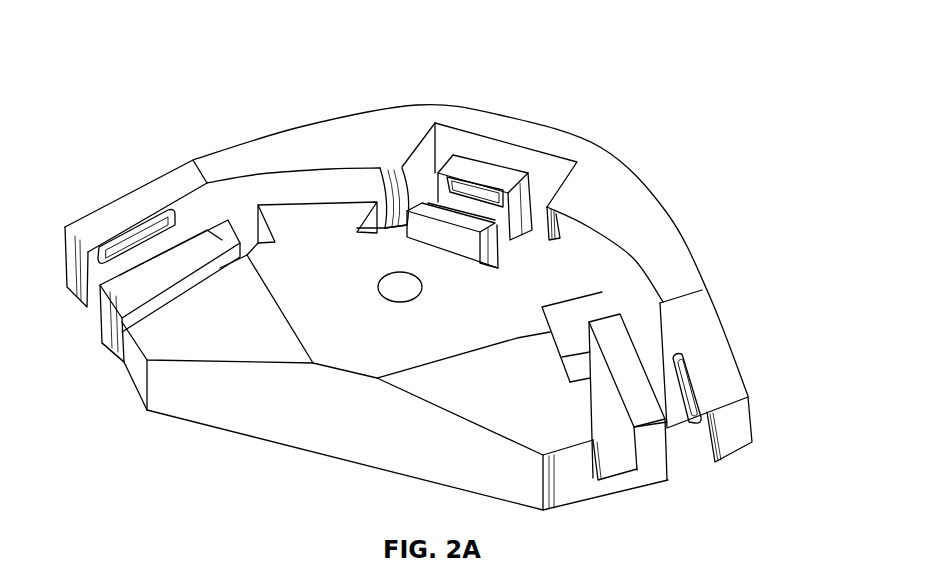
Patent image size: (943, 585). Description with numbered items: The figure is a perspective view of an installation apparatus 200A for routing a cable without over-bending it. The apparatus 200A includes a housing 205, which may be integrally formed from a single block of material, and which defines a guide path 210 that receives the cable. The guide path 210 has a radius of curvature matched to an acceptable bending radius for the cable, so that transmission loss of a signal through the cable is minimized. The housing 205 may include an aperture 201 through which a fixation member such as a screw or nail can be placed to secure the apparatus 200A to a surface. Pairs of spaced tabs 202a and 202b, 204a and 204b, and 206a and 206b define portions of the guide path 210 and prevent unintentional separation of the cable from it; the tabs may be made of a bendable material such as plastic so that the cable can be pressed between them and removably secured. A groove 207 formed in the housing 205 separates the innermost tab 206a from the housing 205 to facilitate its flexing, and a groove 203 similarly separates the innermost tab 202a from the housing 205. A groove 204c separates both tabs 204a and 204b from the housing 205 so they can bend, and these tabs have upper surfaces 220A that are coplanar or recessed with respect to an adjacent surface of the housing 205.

The installation apparatus 200A is at (148, 68).
The upper surfaces 220A is at (428, 208).
The aperture 201 is at (378, 288).
The innermost tab 202a is at (638, 378).
The tab 202b is at (690, 382).
The groove 203 is at (607, 460).
The tab 204a is at (467, 187).
The tab 204b is at (462, 212).
The groove 204c is at (392, 233).
The housing 205 is at (303, 430).
The innermost tab 206a is at (157, 253).
The tab 206b is at (123, 233).
The groove 207 is at (112, 343).
The guide path 210 is at (687, 456).